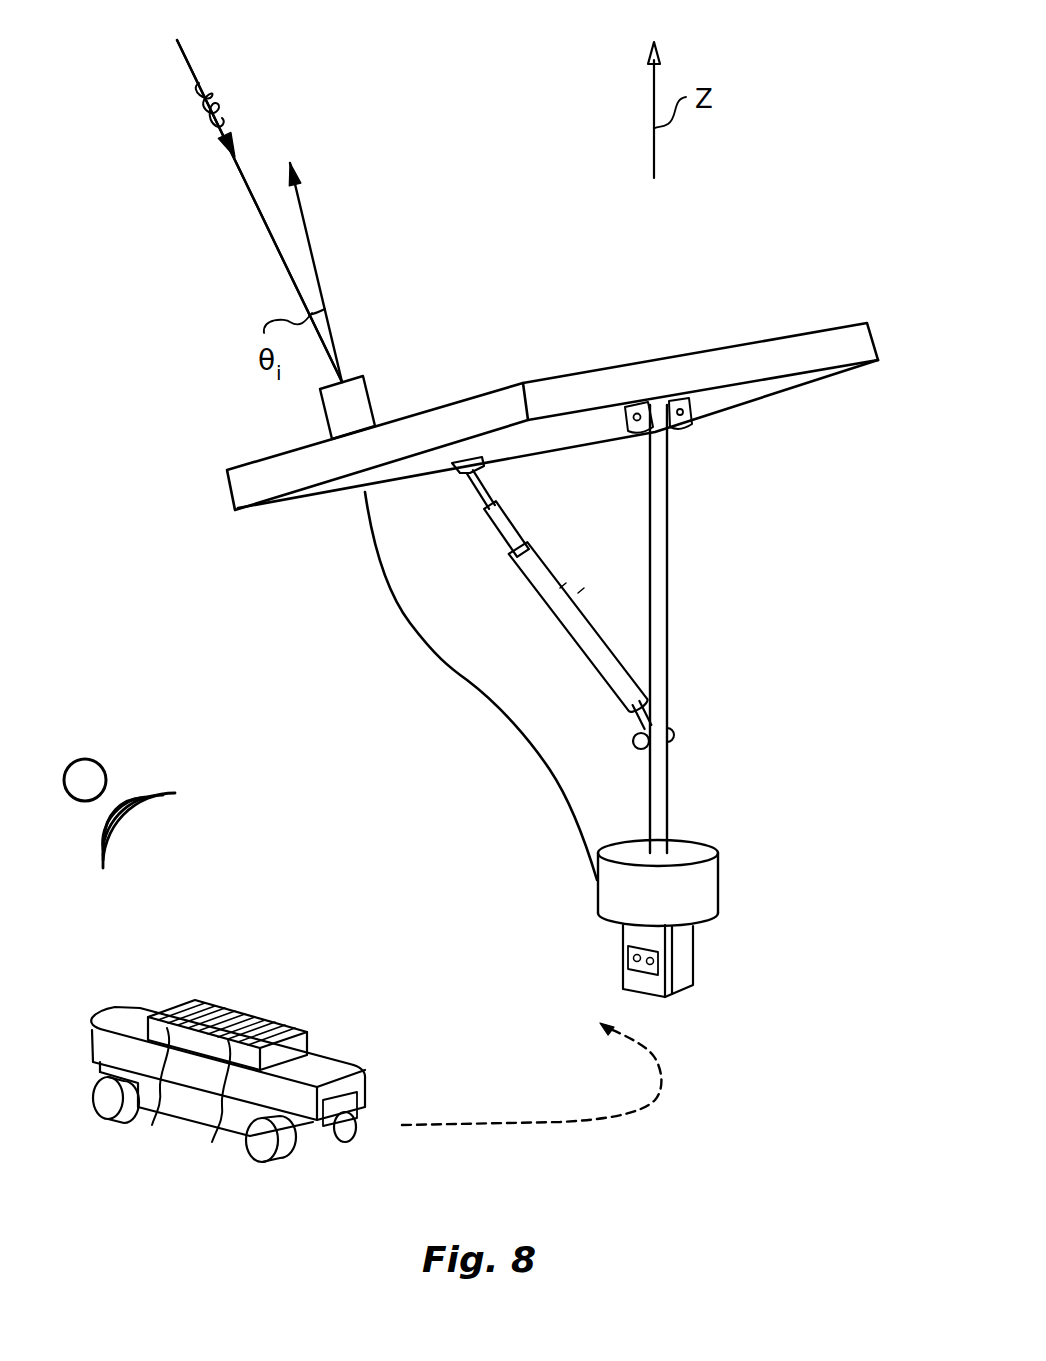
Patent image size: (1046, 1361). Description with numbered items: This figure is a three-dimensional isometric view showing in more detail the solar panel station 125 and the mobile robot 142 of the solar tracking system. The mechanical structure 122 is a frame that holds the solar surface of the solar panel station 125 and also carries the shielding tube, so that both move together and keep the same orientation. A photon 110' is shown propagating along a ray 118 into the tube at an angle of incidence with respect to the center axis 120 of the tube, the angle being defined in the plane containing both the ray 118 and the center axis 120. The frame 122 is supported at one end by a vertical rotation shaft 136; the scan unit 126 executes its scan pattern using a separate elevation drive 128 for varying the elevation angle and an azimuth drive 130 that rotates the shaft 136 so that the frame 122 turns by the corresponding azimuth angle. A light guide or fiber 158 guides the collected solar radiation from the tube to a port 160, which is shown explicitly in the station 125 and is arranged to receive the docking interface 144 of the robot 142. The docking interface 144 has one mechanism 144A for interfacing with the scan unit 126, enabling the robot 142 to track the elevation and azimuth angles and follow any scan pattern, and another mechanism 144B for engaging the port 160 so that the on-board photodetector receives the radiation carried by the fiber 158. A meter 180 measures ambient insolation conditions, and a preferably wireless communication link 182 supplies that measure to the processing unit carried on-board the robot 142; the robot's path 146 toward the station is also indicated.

The photon 110' is at (259, 211).
The ray 118 is at (268, 234).
The center axis 120 is at (318, 273).
The solar panel station 125 is at (740, 245).
The mechanical structure 122 is at (780, 388).
The vertical rotation shaft 136 is at (668, 622).
The elevation drive 128 is at (537, 594).
The light guide 158 is at (376, 551).
The azimuth drive 130 is at (718, 880).
The port 160 is at (623, 960).
The meter 180 is at (104, 761).
The communication link 182 is at (152, 838).
The scan unit 126 is at (358, 748).
The mobile robot 142 is at (338, 1053).
The docking interface 144 is at (240, 1018).
The mechanism for interfacing with scan unit 144A is at (221, 1110).
The mechanism for connection with tube 144B is at (149, 1092).
The travel path 146 is at (660, 1082).